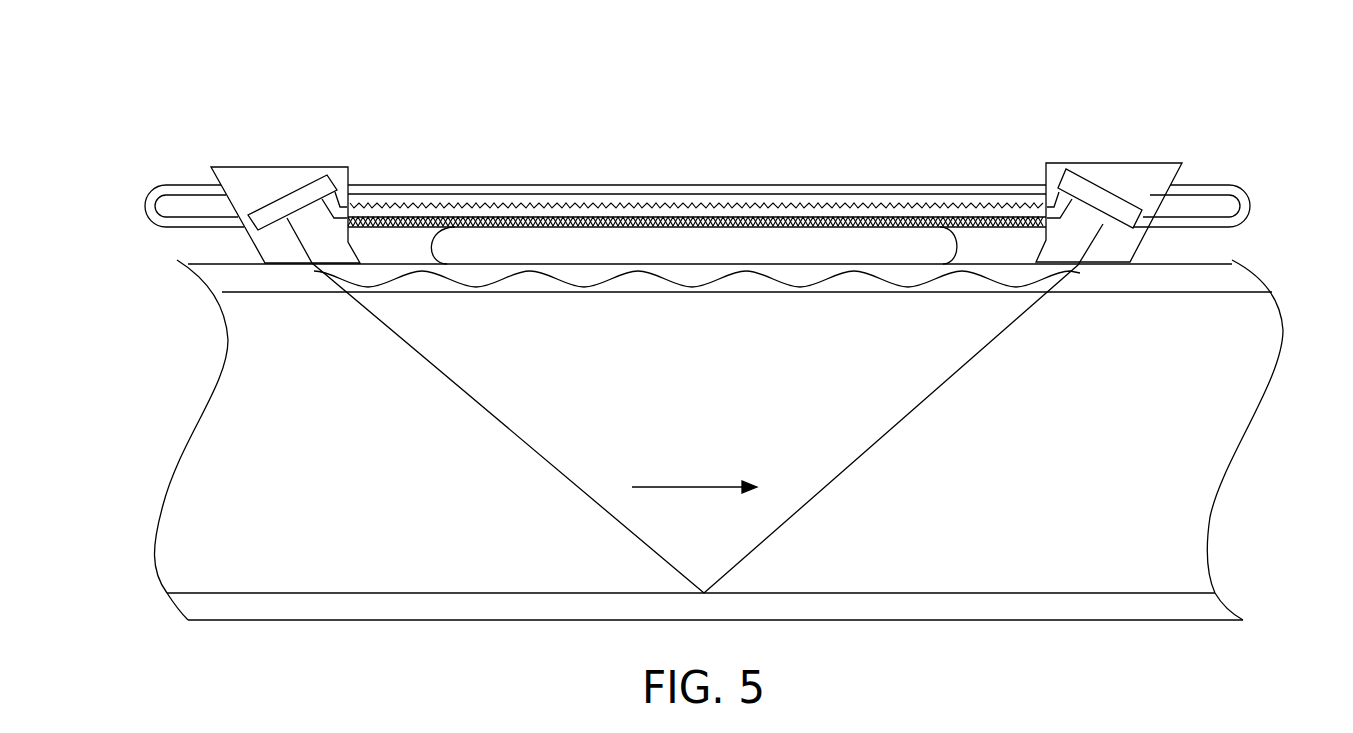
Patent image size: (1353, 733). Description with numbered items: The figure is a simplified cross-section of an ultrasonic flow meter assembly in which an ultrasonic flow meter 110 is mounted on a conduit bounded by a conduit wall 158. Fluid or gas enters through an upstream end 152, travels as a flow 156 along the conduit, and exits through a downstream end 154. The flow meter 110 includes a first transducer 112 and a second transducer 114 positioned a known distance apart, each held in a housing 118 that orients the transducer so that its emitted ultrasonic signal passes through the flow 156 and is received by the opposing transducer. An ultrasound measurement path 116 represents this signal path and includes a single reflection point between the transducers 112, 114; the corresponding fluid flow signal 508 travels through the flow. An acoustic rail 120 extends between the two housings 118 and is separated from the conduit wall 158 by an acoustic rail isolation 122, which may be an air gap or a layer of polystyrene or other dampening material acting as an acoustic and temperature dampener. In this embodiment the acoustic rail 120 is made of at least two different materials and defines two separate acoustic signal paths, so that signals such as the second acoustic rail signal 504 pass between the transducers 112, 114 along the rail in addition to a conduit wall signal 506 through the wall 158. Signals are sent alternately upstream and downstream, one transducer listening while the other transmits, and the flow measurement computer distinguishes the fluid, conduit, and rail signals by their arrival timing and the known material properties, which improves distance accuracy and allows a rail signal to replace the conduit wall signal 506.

The ultrasonic flow meter 110 is at (600, 118).
The first transducer 112 is at (332, 170).
The second transducer 114 is at (1150, 165).
The ultrasound measurement path 116 is at (493, 413).
The housing 118 is at (247, 167).
The acoustic rail 120 is at (640, 185).
The acoustic rail isolation 122 is at (907, 247).
The upstream end 152 is at (136, 490).
The downstream end 154 is at (1237, 509).
The flow 156 is at (710, 467).
The conduit wall 158 is at (1197, 262).
The second acoustic rail signal 504 is at (825, 204).
The conduit wall signal 506 is at (677, 282).
The fluid flow signal 508 is at (925, 401).